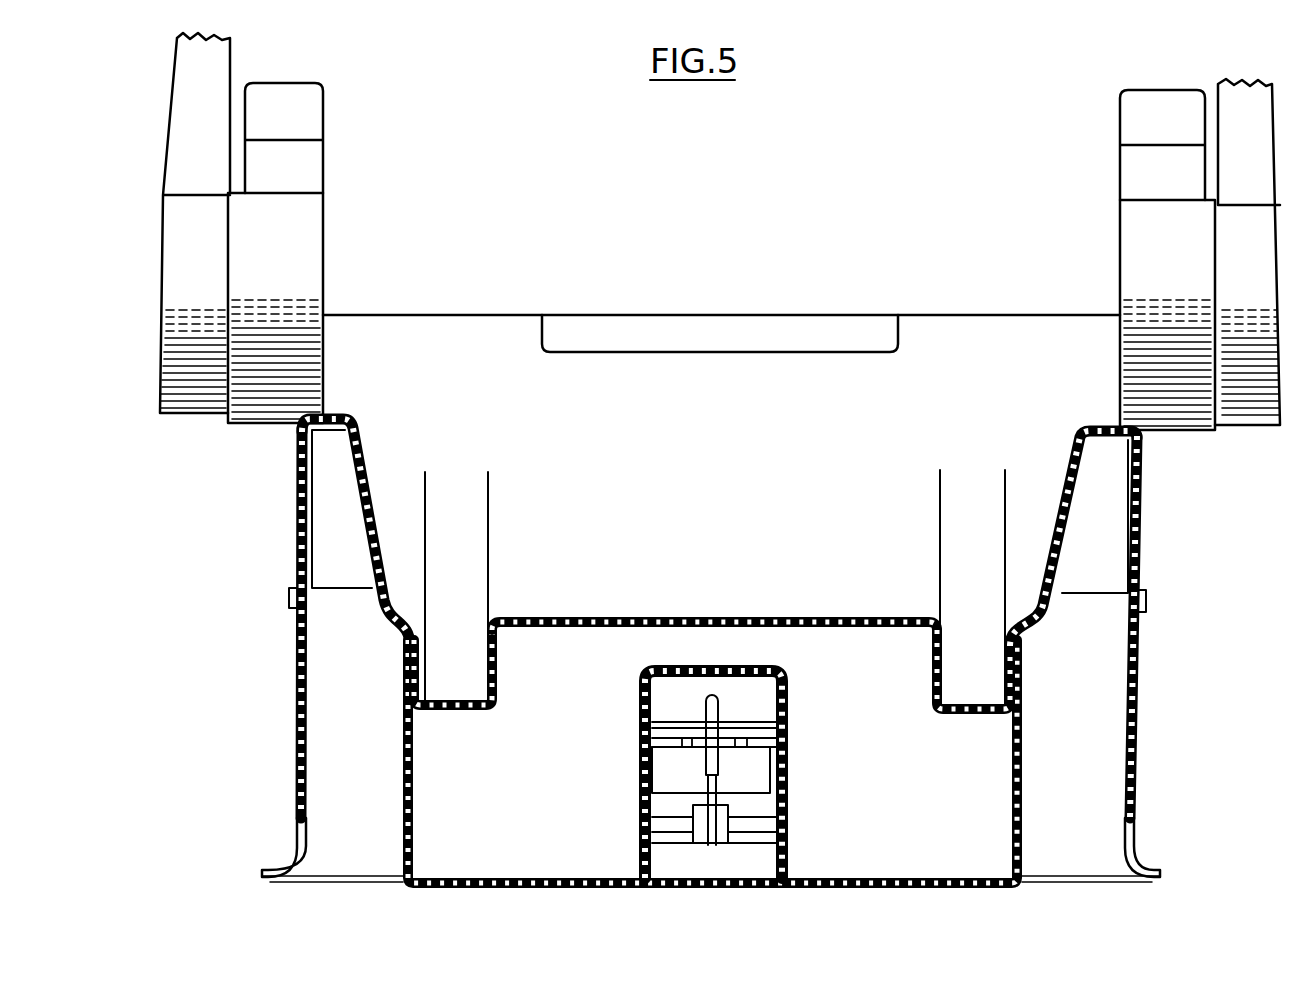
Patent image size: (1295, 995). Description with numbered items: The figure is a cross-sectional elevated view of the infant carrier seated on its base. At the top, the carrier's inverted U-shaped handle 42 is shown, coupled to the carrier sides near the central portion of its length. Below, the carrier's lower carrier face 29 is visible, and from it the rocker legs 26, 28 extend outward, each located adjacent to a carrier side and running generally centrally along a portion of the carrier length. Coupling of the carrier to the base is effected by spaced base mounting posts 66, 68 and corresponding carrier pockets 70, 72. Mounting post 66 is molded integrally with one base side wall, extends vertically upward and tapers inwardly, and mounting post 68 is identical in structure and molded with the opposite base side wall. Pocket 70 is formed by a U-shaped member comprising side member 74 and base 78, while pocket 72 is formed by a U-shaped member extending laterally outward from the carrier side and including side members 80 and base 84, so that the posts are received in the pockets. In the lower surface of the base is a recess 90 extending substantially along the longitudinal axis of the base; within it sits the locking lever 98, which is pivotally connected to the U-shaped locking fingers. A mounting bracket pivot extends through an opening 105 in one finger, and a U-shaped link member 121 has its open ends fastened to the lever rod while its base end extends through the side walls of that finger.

The handle 42 is at (233, 70).
The base 78 is at (297, 465).
The mounting pocket 70 is at (297, 520).
The side member 74 is at (340, 567).
The base mounting post 66 is at (300, 581).
The rocker leg 26 is at (477, 711).
The lower carrier face 29 is at (878, 628).
The rocker leg 28 is at (960, 716).
The mounting pocket 72 is at (1146, 522).
The base 84 is at (1146, 546).
The side members 80 is at (1105, 568).
The base mounting post 68 is at (1135, 578).
The locking lever 98 is at (712, 718).
The opening 105 is at (758, 773).
The U-shaped link member 121 is at (720, 835).
The recess 90 is at (645, 852).